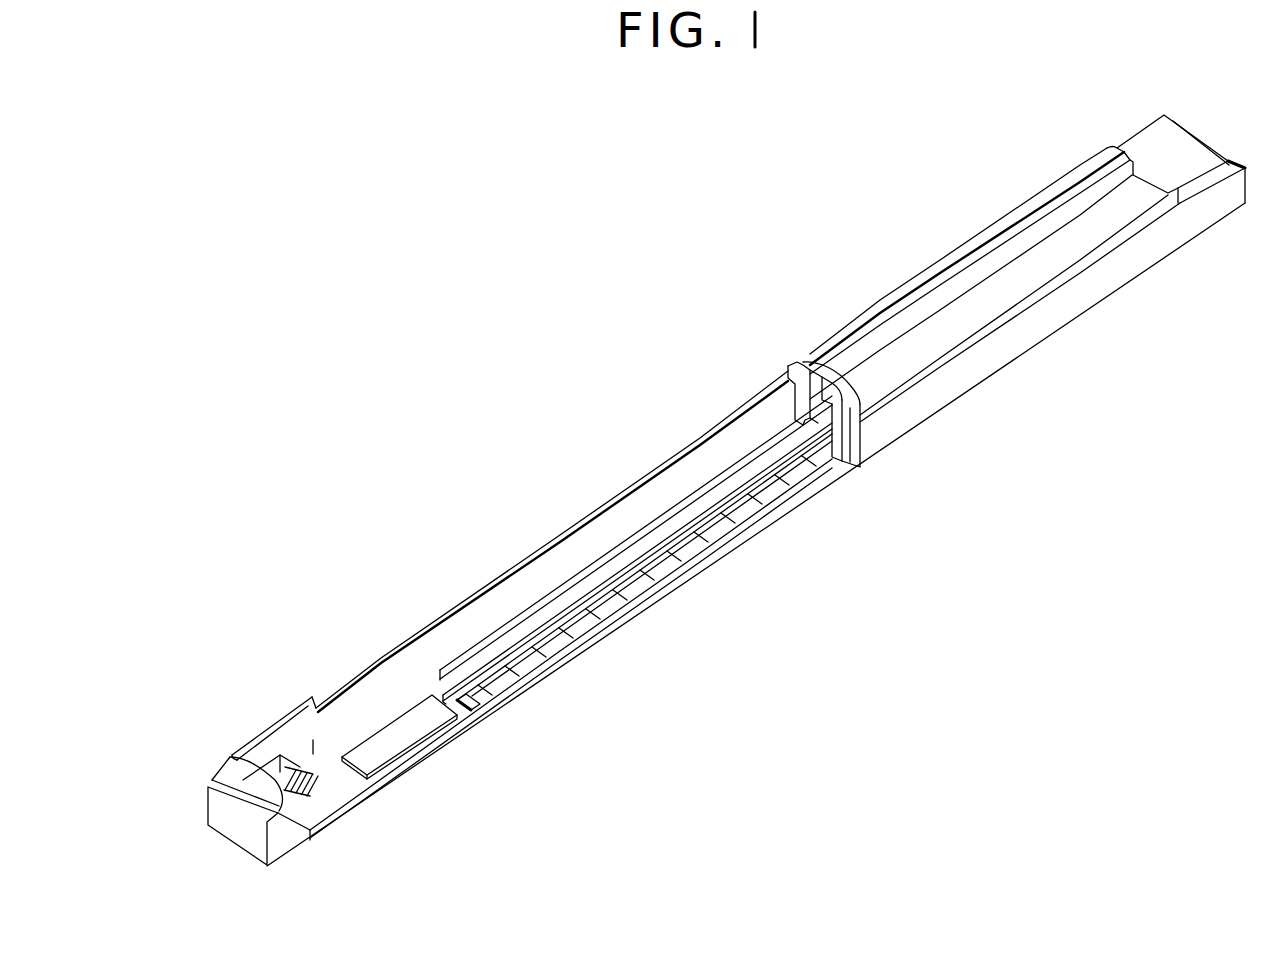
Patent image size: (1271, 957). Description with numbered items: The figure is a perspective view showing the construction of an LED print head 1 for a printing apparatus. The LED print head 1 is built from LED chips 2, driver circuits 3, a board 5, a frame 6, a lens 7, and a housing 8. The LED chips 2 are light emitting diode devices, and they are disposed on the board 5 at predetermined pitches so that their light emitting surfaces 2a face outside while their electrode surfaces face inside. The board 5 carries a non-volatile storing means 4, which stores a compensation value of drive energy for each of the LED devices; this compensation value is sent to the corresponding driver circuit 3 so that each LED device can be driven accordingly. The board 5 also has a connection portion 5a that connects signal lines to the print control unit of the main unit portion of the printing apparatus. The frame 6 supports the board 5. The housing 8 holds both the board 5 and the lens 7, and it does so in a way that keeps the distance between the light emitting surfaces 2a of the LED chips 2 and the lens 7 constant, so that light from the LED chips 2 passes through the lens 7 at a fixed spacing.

The LED print head 1 is at (823, 310).
The LED chips 2 is at (464, 678).
The light emitting surfaces 2a is at (486, 655).
The driver circuits 3 is at (481, 697).
The non-volatile storing means 4 is at (403, 742).
The board 5 is at (320, 814).
The connection portion 5a is at (290, 802).
The frame 6 is at (696, 474).
The lens 7 is at (968, 266).
The housing 8 is at (1176, 140).